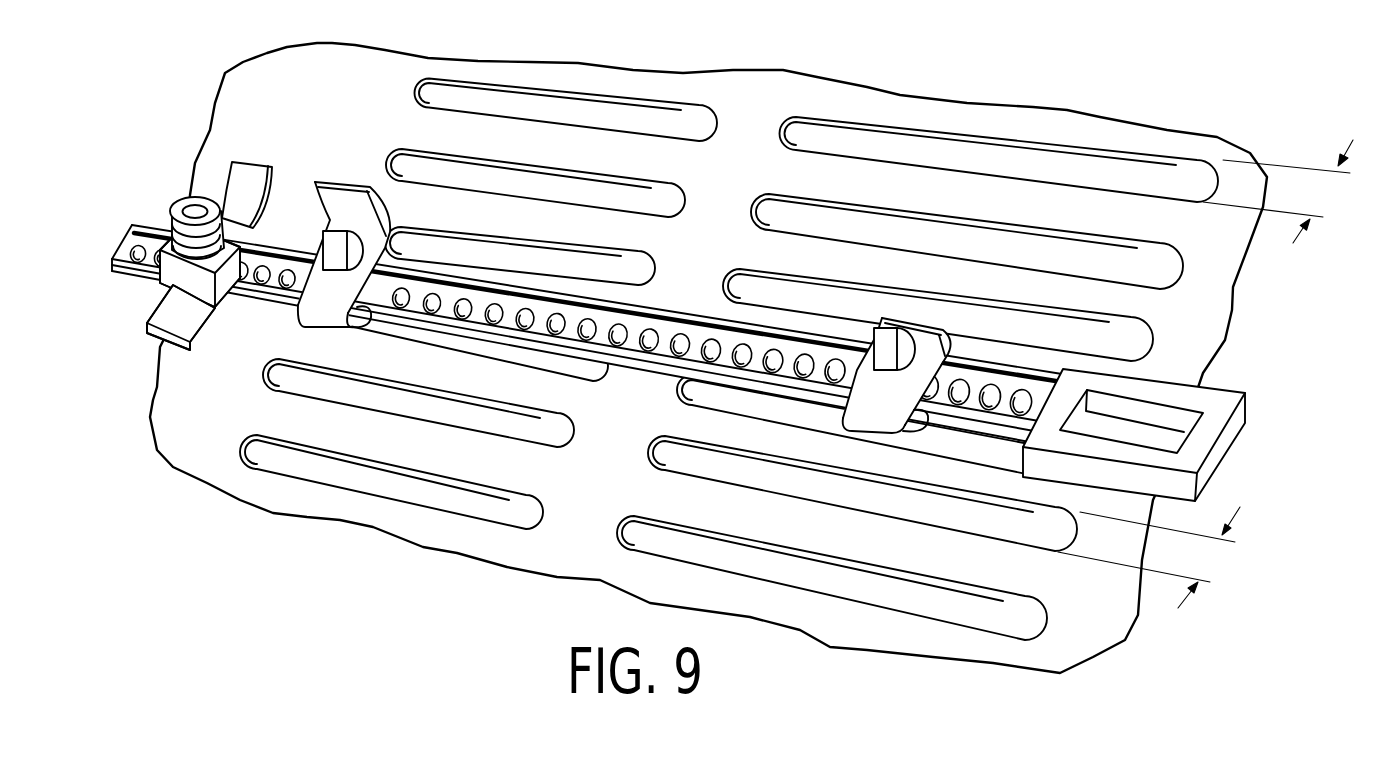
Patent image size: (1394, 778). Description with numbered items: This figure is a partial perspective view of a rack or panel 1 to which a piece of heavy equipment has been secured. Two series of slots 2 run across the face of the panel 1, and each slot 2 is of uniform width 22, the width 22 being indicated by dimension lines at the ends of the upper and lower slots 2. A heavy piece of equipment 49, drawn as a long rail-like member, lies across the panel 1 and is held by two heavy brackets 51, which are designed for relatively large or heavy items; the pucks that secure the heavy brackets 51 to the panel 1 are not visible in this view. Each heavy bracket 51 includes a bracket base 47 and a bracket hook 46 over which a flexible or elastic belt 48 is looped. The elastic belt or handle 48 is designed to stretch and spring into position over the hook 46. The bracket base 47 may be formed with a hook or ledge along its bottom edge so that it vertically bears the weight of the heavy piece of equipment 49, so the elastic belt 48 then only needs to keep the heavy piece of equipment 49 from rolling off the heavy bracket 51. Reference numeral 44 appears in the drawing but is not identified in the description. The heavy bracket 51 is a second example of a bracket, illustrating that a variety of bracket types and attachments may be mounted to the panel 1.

The panel 1 is at (587, 507).
The slots 2 is at (590, 183).
The width 22 is at (1205, 374).
The rail 44 is at (933, 427).
The bracket hook 46 is at (333, 243).
The bracket base 47 is at (320, 313).
The elastic belt 48 is at (345, 193).
The heavy piece of equipment 49 is at (637, 363).
The heavy bracket 51 is at (370, 333).